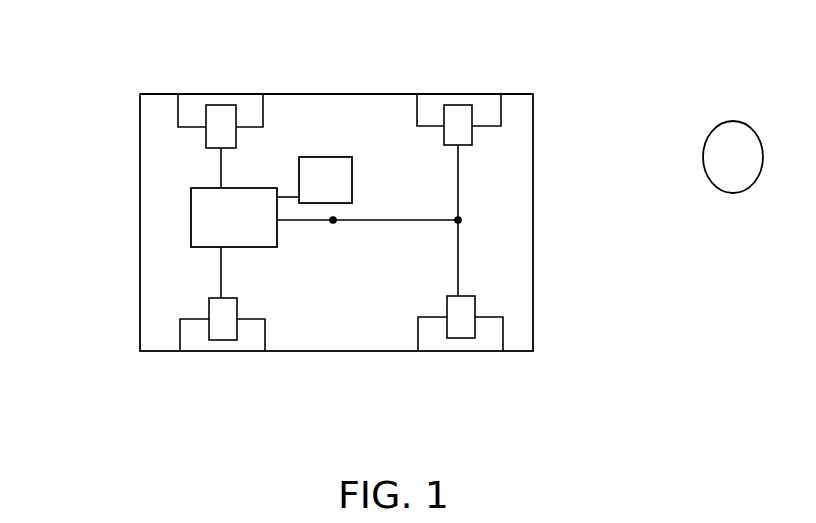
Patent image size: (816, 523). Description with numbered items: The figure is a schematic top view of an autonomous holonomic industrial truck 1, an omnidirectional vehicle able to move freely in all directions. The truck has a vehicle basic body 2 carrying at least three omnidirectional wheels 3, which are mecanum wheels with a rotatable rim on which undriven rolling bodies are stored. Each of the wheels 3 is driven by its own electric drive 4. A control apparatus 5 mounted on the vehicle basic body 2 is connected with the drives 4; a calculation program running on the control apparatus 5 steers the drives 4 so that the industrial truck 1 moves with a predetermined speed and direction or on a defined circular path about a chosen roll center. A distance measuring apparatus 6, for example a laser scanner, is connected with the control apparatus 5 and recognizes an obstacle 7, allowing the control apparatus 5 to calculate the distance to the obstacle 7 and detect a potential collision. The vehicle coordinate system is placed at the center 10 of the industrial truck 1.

The holonomic industrial truck 1 is at (99, 64).
The vehicle basic body 2 is at (327, 115).
The omnidirectional wheels 3 is at (200, 104).
The electric drive 4 is at (206, 144).
The control apparatus 5 is at (235, 232).
The distance measuring apparatus 6 is at (334, 194).
The obstacle 7 is at (728, 176).
The center 10 is at (334, 224).